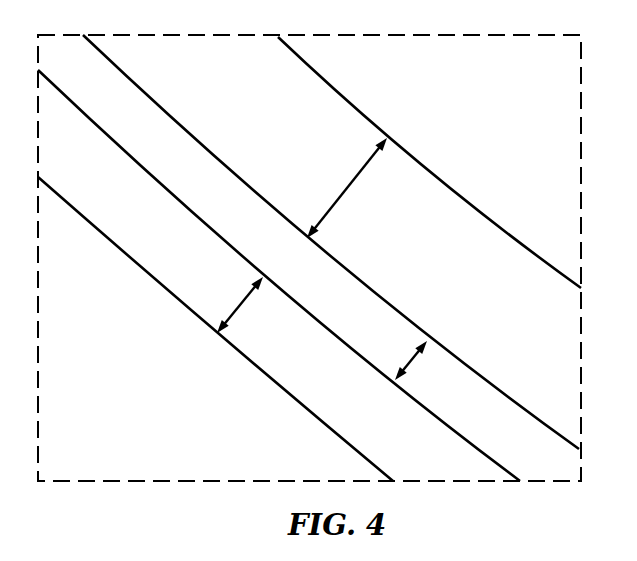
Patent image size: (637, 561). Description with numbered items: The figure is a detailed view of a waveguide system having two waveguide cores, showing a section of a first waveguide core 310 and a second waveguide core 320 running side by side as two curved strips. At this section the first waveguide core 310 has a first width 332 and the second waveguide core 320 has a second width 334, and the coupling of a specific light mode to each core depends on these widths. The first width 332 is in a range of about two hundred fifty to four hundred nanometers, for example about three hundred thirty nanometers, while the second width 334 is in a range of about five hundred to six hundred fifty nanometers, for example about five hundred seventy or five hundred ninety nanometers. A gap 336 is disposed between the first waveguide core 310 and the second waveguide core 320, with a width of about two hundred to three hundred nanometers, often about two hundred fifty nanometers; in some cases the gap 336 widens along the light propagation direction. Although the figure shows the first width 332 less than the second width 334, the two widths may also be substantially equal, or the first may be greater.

The first waveguide core 310 is at (172, 294).
The second waveguide core 320 is at (360, 108).
The first width W1 332 is at (232, 315).
The second width W2 334 is at (343, 197).
The gap 336 is at (410, 367).